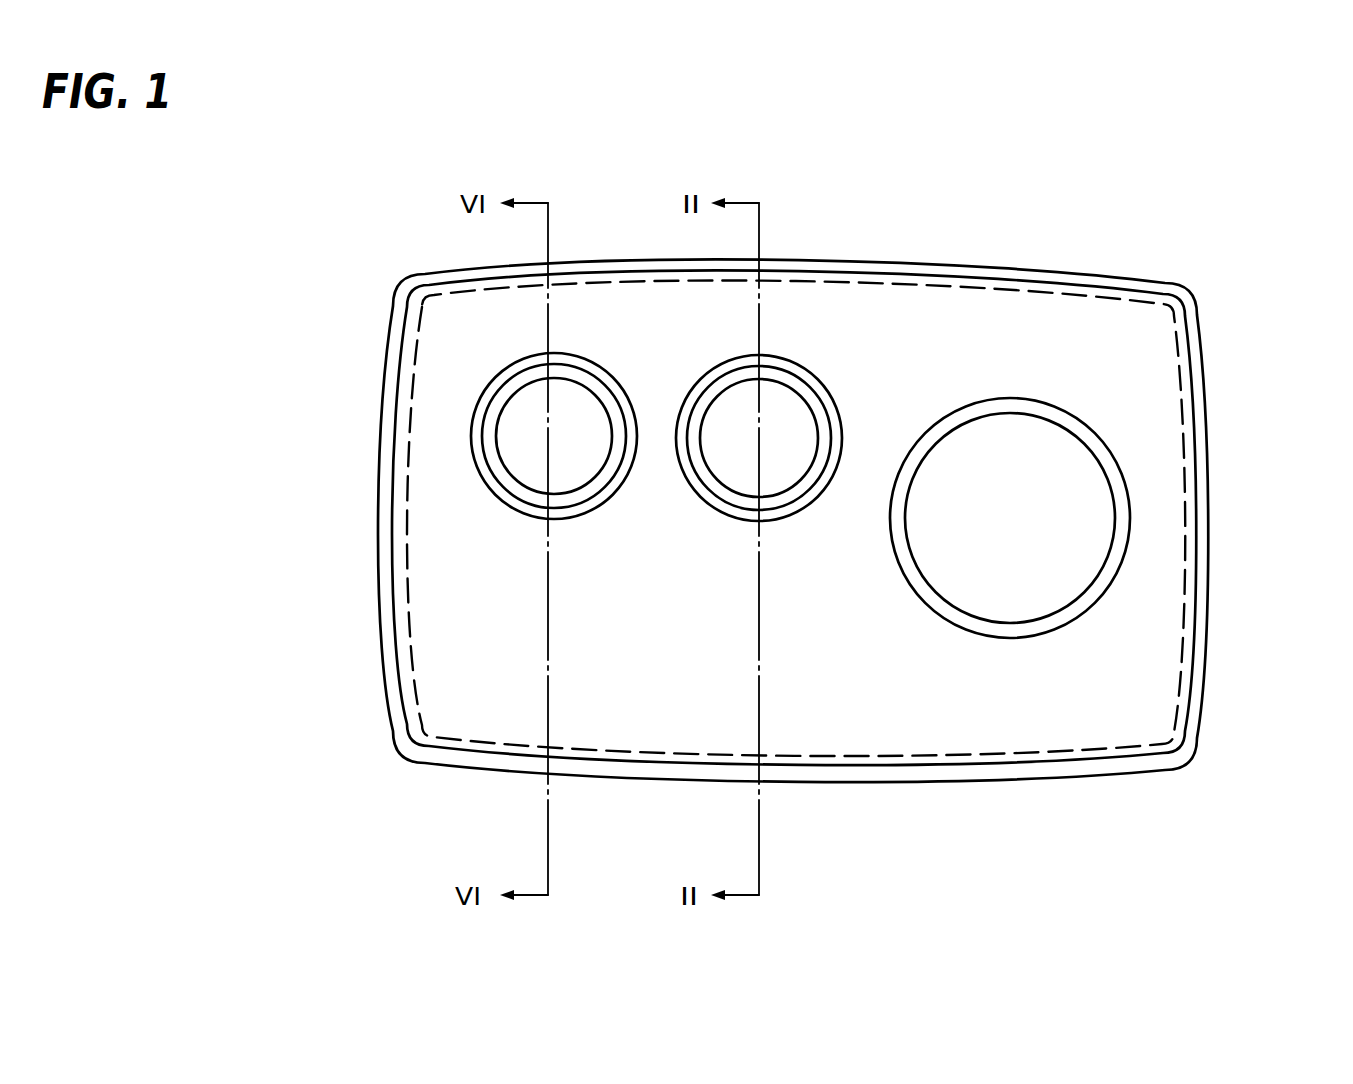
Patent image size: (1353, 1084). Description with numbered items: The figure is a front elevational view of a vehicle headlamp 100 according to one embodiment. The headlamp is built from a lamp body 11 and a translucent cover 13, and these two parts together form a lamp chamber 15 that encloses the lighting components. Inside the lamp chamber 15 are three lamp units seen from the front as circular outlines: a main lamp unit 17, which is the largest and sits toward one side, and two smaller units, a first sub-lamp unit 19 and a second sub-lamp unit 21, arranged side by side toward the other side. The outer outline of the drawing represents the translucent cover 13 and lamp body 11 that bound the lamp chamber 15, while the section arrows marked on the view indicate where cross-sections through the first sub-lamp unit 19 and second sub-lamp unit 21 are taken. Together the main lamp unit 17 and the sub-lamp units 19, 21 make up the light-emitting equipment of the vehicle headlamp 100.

The vehicle headlamp 100 is at (1036, 268).
The lamp body 11 is at (437, 760).
The translucent cover 13 is at (1199, 610).
The lamp chamber 15 is at (878, 690).
The main lamp unit 17 is at (1092, 424).
The first sub-lamp unit 19 is at (815, 367).
The second sub-lamp unit 21 is at (597, 364).